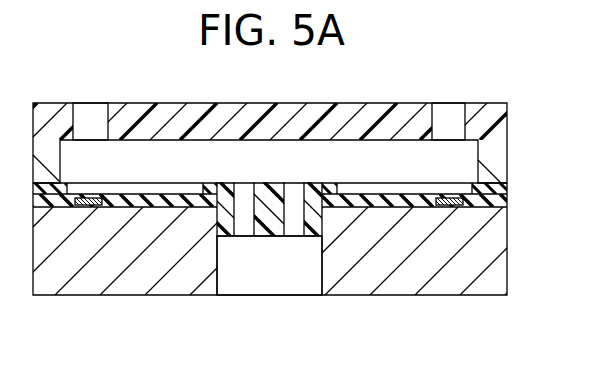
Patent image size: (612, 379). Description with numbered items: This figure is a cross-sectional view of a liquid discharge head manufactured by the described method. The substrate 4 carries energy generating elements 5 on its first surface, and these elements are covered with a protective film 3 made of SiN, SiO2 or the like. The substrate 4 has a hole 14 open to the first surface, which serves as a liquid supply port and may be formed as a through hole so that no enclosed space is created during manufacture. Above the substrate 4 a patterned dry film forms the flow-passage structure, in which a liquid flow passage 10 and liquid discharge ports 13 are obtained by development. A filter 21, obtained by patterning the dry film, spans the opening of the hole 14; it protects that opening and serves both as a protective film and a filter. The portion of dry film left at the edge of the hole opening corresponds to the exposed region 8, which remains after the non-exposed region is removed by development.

The liquid discharge port 13 is at (464, 128).
The liquid flow passage 10 is at (470, 162).
The exposed region 8 is at (497, 190).
The protective film 3 is at (492, 201).
The energy generating element 5 is at (453, 207).
The substrate 4 is at (490, 272).
The filter 21 is at (267, 228).
The hole 14 is at (322, 262).